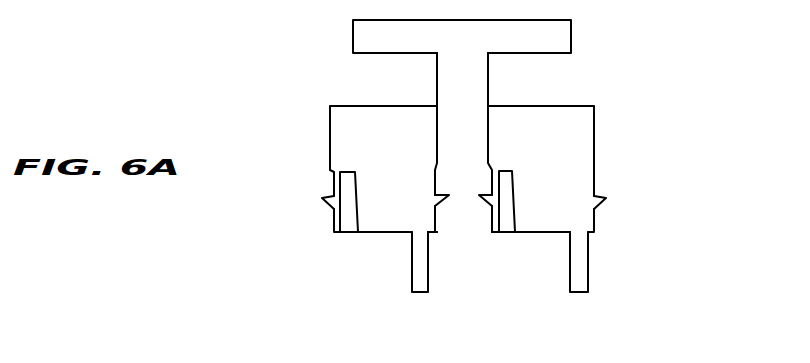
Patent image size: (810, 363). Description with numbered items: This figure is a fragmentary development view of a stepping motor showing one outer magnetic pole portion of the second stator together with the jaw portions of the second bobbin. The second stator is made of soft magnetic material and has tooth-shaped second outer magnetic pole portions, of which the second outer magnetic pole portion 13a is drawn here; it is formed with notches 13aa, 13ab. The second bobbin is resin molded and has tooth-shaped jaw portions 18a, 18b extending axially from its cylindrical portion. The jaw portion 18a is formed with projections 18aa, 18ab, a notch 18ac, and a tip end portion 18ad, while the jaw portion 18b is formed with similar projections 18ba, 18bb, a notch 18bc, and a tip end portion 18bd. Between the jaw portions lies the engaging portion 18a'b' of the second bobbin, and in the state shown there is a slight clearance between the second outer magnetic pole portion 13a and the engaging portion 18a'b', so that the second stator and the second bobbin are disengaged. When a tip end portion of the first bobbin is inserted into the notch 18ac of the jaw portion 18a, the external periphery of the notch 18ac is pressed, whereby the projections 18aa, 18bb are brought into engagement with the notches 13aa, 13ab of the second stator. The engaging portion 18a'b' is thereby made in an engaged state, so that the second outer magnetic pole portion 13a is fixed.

The engaging portion 18a'b' is at (554, 122).
The jaw portion 18a is at (588, 161).
The jaw portion 18b is at (345, 131).
The projection 18aa is at (493, 201).
The projection 18bb is at (437, 197).
The projection 18ab is at (606, 200).
The projection 18ba is at (329, 203).
The notch 18ac is at (510, 170).
The notch 18bc is at (340, 172).
The tip end portion 18ad is at (580, 278).
The tip end portion 18bd is at (420, 266).
The second outer magnetic pole portion 13a is at (464, 212).
The notch 13ab is at (447, 206).
The notch 13aa is at (481, 206).